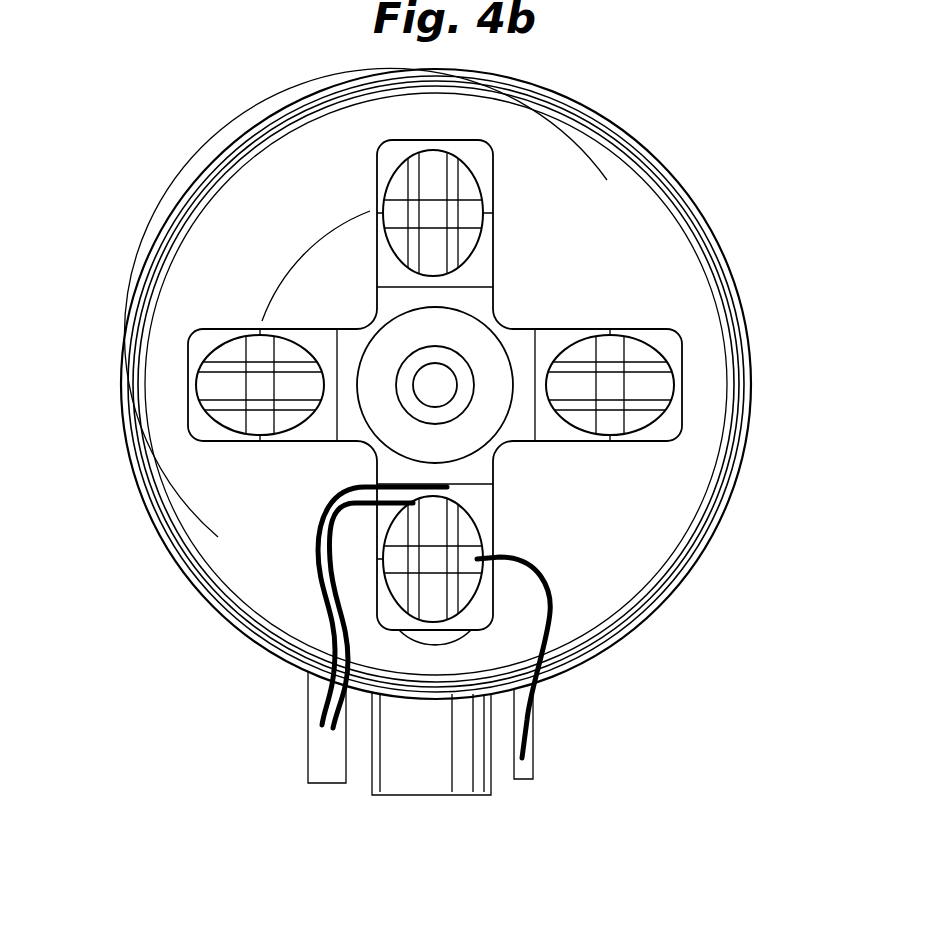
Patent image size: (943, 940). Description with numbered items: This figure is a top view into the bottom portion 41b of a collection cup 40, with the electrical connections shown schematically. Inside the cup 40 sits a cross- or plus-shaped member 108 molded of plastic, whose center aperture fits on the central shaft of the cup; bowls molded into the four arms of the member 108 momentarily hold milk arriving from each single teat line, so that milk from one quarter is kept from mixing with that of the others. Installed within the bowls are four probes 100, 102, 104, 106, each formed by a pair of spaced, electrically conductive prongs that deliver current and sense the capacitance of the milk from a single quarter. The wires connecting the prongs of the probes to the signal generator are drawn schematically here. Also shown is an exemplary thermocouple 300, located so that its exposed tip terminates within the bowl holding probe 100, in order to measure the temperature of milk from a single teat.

The collection cup 40 is at (734, 288).
The bottom portion 41b is at (749, 373).
The probe 100 is at (448, 523).
The probe 102 is at (645, 403).
The probe 104 is at (452, 185).
The probe 106 is at (230, 367).
The cross-shaped member 108 is at (572, 327).
The thermocouple 300 is at (548, 612).